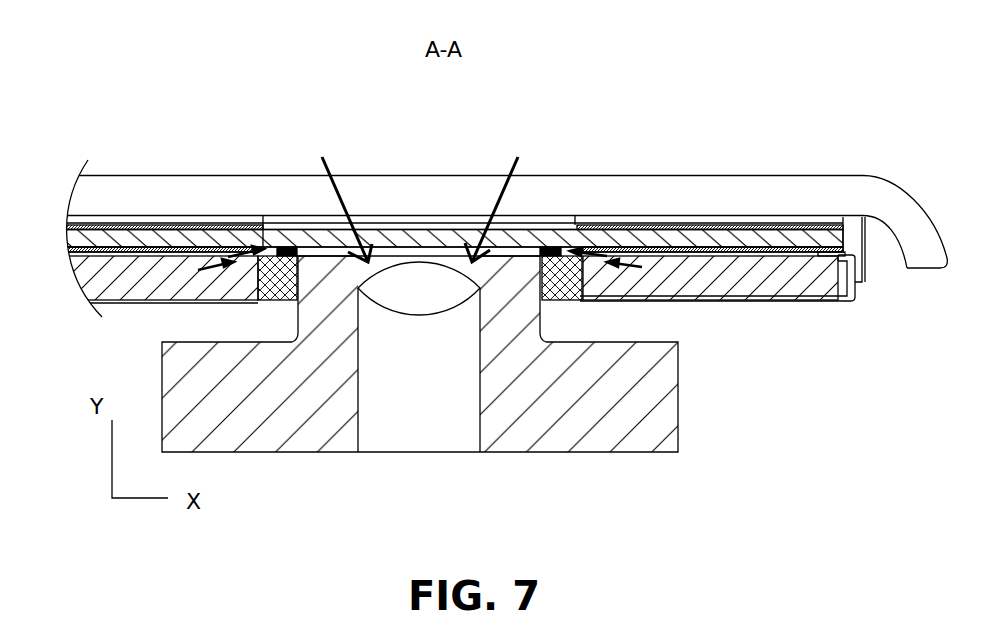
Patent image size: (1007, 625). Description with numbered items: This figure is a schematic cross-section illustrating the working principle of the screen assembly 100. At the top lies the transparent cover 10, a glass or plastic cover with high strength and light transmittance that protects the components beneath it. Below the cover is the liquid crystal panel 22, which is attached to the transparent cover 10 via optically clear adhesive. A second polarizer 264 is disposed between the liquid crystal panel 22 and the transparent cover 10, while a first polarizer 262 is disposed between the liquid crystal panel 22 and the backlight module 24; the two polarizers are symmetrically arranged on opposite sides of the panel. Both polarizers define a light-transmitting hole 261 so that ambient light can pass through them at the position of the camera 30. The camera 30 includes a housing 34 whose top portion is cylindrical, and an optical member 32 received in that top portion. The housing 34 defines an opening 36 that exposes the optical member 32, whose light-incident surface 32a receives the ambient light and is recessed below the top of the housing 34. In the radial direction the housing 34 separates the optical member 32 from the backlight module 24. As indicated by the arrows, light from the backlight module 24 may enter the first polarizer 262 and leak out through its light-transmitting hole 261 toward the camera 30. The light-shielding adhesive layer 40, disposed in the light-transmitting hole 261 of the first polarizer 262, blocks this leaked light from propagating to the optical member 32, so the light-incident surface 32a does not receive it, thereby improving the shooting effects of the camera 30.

The screen assembly 100 is at (138, 122).
The transparent cover 10 is at (628, 190).
The liquid crystal panel 22 is at (703, 240).
The backlight module 24 is at (713, 280).
The light-transmitting hole 261 is at (293, 248).
The first polarizer 262 is at (140, 253).
The second polarizer 264 is at (150, 227).
The camera 30 is at (623, 478).
The optical member 32 is at (428, 288).
The light-incident surface 32a is at (401, 262).
The housing 34 is at (543, 420).
The opening 36 is at (502, 260).
The light-shielding adhesive layer 40 is at (548, 247).